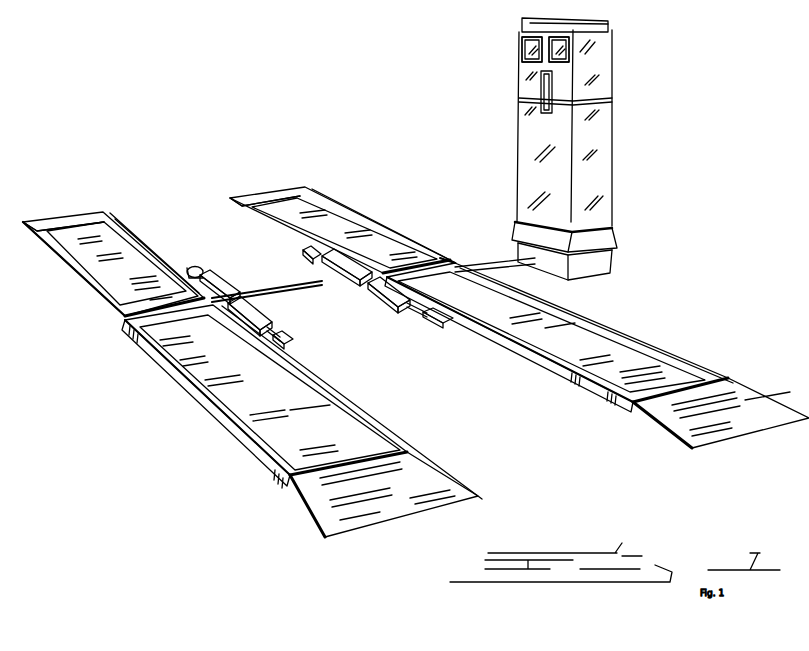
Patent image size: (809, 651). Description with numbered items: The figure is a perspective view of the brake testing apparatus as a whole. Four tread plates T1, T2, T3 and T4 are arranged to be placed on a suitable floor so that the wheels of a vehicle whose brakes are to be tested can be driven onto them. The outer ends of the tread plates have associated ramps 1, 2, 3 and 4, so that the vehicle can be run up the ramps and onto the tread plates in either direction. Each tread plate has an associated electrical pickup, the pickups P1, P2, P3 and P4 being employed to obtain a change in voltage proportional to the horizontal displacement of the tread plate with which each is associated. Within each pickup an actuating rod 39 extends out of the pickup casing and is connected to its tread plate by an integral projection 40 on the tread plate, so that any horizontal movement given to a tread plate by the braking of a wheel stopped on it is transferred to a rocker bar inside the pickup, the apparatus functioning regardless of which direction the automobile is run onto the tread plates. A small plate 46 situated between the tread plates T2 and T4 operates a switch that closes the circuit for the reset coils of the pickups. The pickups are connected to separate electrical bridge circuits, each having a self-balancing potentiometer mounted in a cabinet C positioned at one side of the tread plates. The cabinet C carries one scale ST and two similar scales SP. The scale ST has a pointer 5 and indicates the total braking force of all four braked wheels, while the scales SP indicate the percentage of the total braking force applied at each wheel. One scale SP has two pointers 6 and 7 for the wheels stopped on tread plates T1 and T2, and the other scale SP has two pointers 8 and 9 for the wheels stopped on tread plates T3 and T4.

The ramp 1 is at (75, 216).
The ramp 2 is at (292, 192).
The ramp 3 is at (330, 517).
The ramp 4 is at (680, 428).
The tread plate T1 is at (118, 277).
The tread plate T2 is at (377, 240).
The tread plate T3 is at (255, 415).
The tread plate T4 is at (630, 357).
The electrical pickup P1 is at (220, 282).
The electrical pickup P2 is at (327, 270).
The electrical pickup P3 is at (260, 308).
The electrical pickup P4 is at (383, 294).
The actuating rod 39 is at (272, 333).
The integral projection 40 is at (197, 267).
The small plate 46 is at (450, 258).
The cabinet C is at (603, 185).
The scale SP is at (522, 49).
The scale ST is at (540, 90).
The pointer 5 is at (547, 112).
The pointer 6 is at (528, 57).
The pointer 7 is at (522, 43).
The pointer 8 is at (562, 55).
The pointer 9 is at (563, 45).